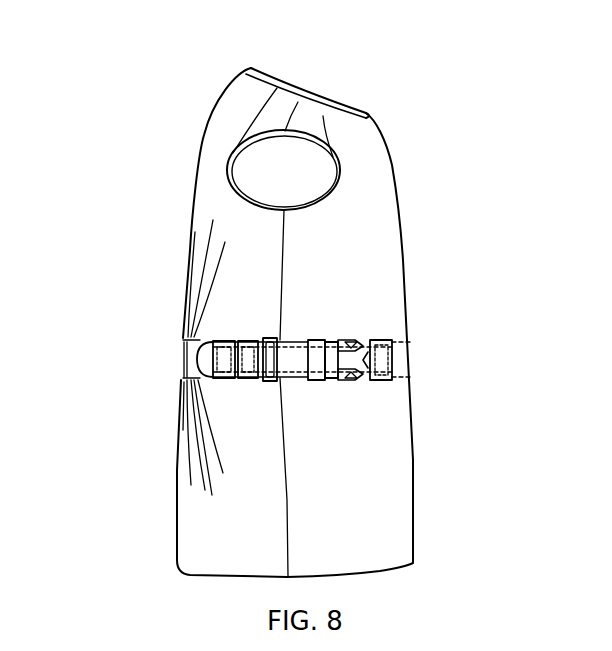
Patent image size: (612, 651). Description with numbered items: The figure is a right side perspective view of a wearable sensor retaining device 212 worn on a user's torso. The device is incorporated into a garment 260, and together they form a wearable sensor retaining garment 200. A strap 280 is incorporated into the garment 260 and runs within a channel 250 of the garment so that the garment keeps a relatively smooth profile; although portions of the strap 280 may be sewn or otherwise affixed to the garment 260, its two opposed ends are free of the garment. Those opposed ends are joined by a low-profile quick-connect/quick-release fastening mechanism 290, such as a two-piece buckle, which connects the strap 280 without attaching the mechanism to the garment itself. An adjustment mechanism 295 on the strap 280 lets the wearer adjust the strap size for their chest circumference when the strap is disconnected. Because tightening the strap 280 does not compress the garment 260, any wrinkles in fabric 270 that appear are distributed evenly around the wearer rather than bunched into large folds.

The wearable sensor retaining garment 200 is at (137, 67).
The wearable sensor retaining device 212 is at (430, 356).
The channel 250 is at (400, 358).
The garment 260 is at (379, 536).
The wrinkles in fabric 270 is at (205, 430).
The strap 280 is at (297, 352).
The quick-connect/quick-release fastening mechanism 290 is at (373, 378).
The adjustment mechanism 295 is at (201, 353).